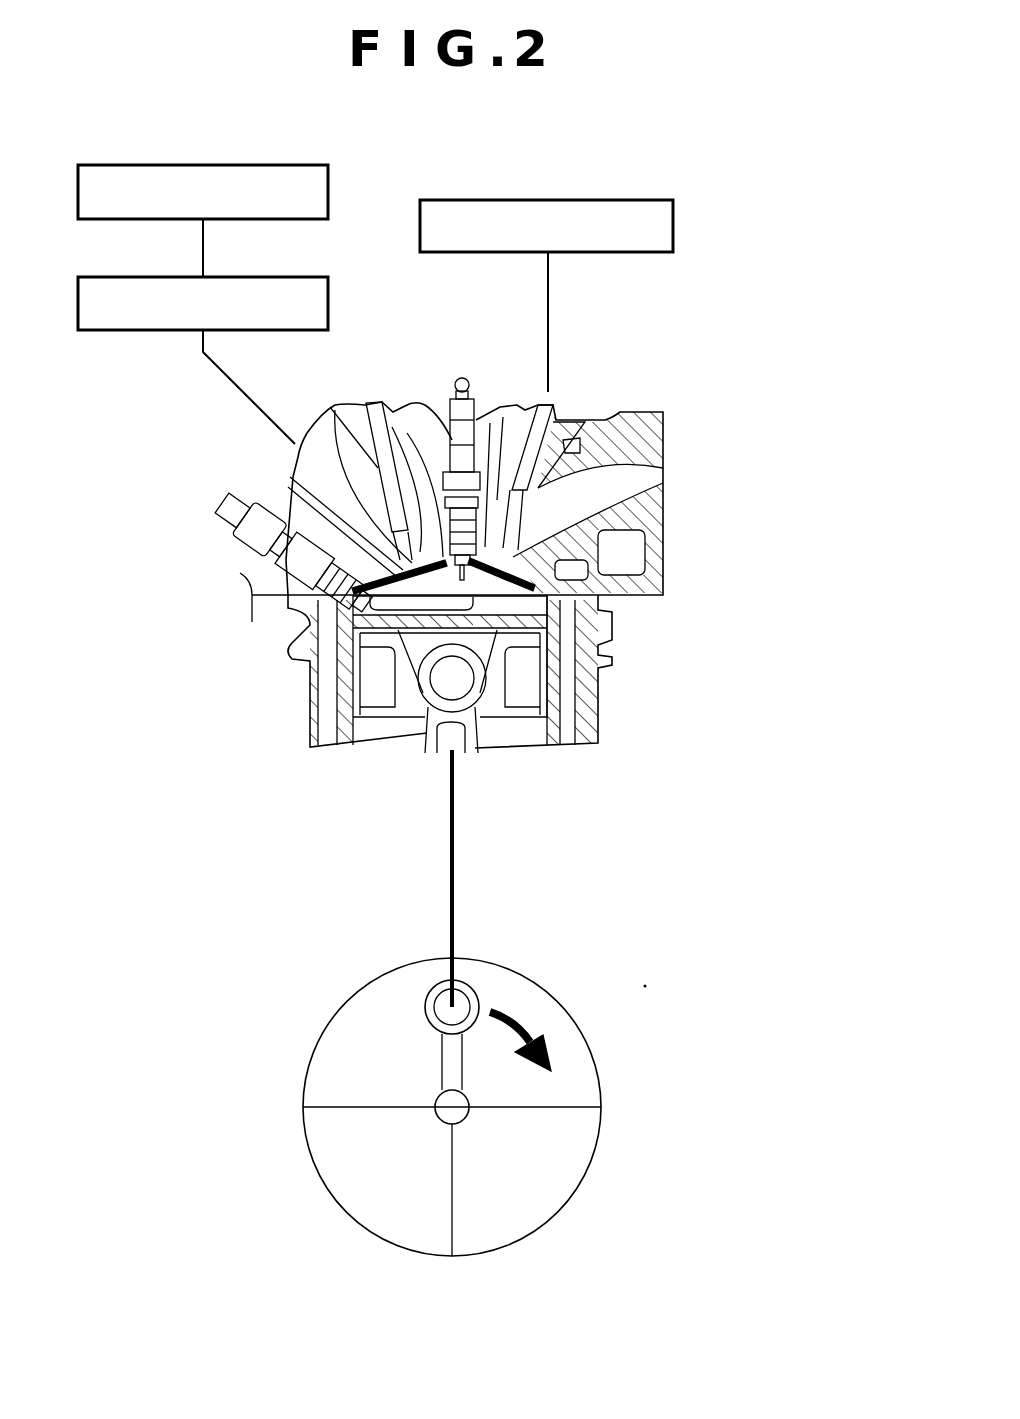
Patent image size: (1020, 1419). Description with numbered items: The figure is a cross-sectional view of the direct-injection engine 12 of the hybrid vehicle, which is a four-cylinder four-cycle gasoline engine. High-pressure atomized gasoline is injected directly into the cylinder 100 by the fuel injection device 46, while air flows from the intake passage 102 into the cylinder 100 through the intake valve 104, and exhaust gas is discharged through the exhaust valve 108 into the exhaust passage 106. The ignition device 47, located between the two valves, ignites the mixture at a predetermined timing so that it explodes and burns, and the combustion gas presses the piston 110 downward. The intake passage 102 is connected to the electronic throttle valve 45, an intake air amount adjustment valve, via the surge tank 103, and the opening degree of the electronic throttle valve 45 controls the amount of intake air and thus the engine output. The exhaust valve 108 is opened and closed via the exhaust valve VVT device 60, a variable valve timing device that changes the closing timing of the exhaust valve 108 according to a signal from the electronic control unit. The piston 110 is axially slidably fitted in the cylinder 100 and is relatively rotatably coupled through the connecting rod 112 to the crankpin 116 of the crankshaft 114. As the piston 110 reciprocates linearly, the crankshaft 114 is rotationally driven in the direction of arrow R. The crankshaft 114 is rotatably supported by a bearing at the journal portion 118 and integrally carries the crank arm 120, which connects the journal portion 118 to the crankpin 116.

The direct-injection engine 12 is at (693, 348).
The electronic throttle valve 45 is at (307, 166).
The fuel injection device 46 is at (258, 520).
The ignition device 47 is at (495, 410).
The exhaust valve VVT device 60 is at (660, 201).
The cylinder 100 is at (562, 693).
The intake passage 102 is at (318, 478).
The surge tank 103 is at (307, 278).
The intake valve 104 is at (326, 405).
The exhaust passage 106 is at (602, 487).
The exhaust valve 108 is at (628, 517).
The piston 110 is at (403, 642).
The connecting rod 112 is at (455, 858).
The crankshaft 114 is at (481, 1134).
The crankpin 116 is at (460, 1004).
The journal portion 118 is at (447, 1114).
The crank arm 120 is at (453, 1066).